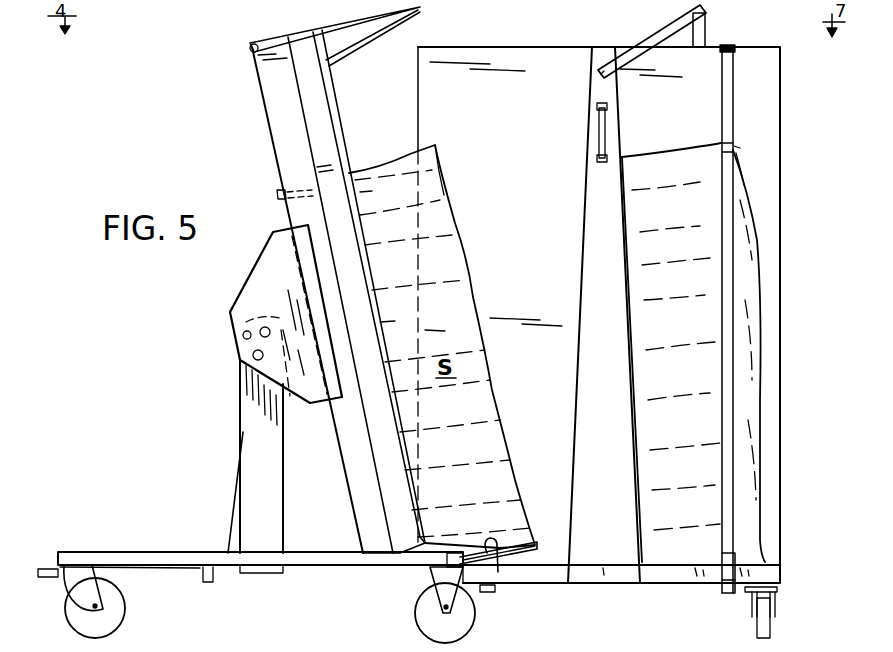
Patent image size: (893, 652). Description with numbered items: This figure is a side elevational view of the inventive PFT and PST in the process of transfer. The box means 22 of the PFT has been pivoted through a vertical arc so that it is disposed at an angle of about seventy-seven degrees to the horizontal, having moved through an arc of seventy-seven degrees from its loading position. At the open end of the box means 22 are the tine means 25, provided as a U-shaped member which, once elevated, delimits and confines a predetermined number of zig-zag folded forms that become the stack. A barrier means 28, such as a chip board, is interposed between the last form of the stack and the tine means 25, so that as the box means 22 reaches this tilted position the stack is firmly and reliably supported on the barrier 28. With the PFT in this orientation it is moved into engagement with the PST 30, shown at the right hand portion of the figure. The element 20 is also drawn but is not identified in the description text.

The caster wheel 20 is at (184, 581).
The mast 22 is at (293, 34).
The lifting fork tines 25 is at (537, 556).
The hook 28 is at (487, 553).
The rack base 30 is at (665, 591).